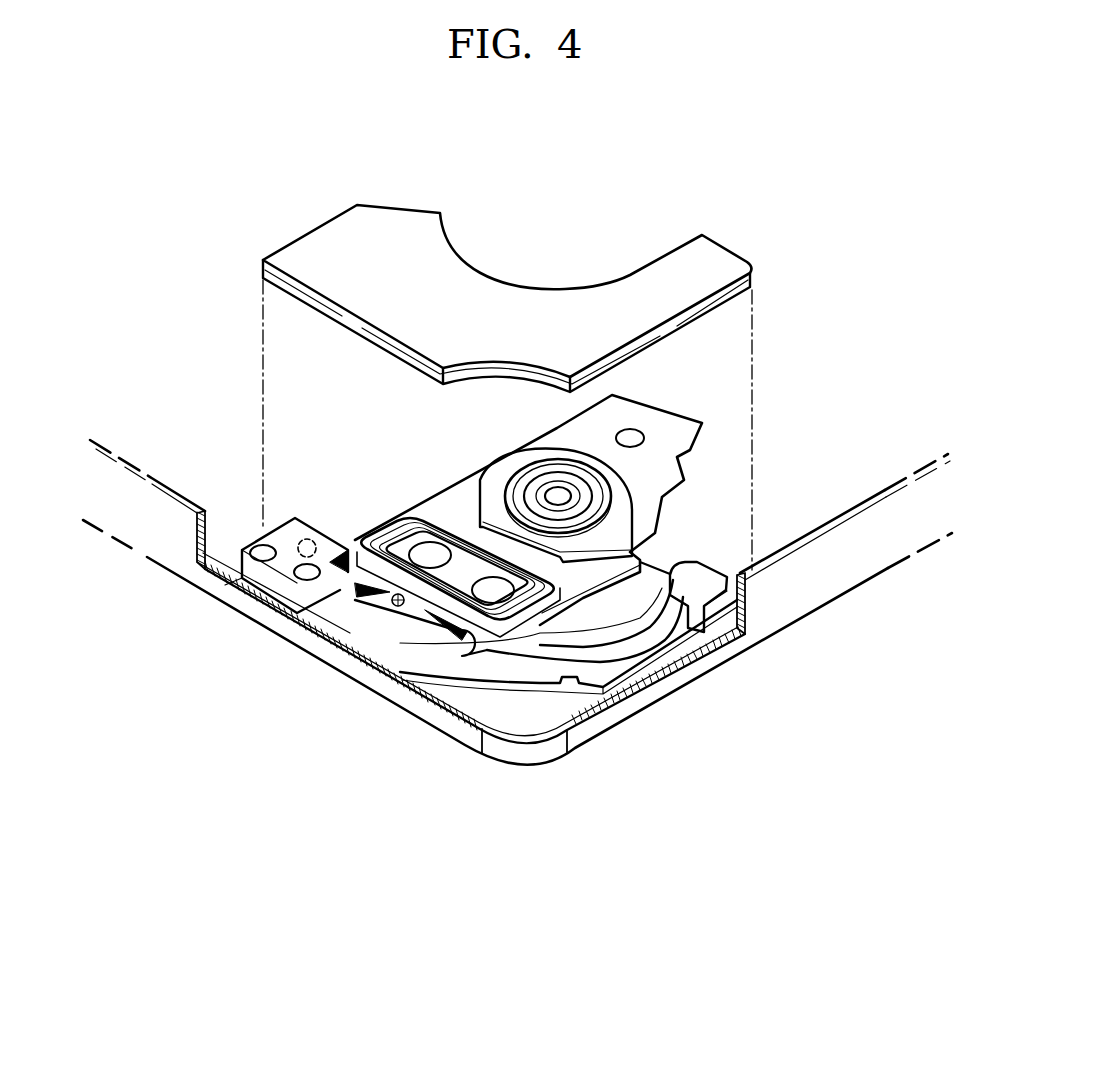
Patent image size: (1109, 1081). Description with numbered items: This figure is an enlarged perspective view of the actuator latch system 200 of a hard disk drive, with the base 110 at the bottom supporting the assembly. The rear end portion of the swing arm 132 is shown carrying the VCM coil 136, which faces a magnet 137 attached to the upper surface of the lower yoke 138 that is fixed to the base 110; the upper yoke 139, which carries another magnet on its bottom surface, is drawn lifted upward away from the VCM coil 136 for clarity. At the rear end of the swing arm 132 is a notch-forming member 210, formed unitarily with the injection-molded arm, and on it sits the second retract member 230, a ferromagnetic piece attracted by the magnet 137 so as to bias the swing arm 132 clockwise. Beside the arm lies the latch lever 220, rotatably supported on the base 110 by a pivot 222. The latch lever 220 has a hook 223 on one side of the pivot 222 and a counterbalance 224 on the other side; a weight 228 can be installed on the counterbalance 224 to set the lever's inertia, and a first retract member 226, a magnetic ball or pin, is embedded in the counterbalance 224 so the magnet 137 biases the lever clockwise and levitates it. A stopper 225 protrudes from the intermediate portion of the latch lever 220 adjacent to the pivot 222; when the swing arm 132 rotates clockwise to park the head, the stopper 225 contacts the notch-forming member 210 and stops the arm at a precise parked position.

The base 110 is at (777, 623).
The swing arm 132 is at (552, 430).
The VCM coil 136 is at (427, 527).
The magnet 137 is at (640, 623).
The lower yoke 138 is at (692, 582).
The upper yoke 139 is at (622, 298).
The actuator latch system 200 is at (380, 787).
The notch-forming member 210 is at (420, 617).
The latch lever 220 is at (352, 605).
The pivot 222 is at (300, 577).
The hook 223 is at (463, 634).
The counterbalance 224 is at (285, 535).
The stopper 225 is at (363, 578).
The first retract member 226 is at (308, 548).
The weight 228 is at (225, 585).
The second retract member 230 is at (395, 606).